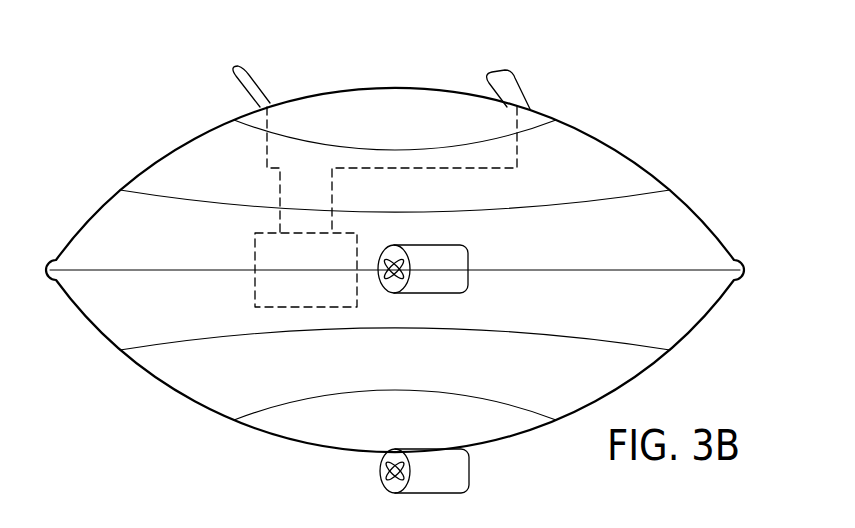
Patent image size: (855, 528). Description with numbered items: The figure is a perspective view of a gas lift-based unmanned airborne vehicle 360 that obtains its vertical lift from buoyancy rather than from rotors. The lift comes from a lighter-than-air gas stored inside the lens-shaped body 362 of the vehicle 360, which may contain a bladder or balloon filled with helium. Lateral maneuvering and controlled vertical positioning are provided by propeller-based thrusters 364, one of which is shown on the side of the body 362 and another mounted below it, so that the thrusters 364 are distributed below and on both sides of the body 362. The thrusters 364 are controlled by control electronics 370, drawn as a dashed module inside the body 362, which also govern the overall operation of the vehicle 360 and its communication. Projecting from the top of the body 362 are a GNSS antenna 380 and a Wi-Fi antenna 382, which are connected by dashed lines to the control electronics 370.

The unmanned airborne vehicle 360 is at (400, 283).
The body 362 is at (133, 177).
The propeller-based thrusters 364 is at (458, 280).
The control electronics 370 is at (255, 251).
The GNSS antenna 380 is at (262, 90).
The Wi-Fi antenna 382 is at (520, 94).